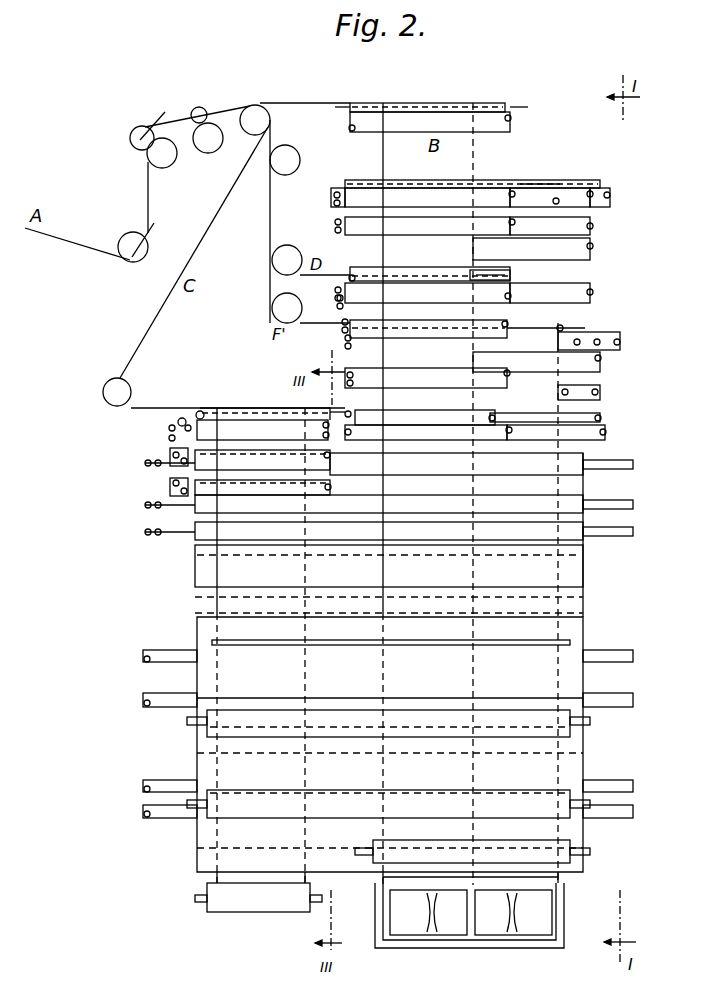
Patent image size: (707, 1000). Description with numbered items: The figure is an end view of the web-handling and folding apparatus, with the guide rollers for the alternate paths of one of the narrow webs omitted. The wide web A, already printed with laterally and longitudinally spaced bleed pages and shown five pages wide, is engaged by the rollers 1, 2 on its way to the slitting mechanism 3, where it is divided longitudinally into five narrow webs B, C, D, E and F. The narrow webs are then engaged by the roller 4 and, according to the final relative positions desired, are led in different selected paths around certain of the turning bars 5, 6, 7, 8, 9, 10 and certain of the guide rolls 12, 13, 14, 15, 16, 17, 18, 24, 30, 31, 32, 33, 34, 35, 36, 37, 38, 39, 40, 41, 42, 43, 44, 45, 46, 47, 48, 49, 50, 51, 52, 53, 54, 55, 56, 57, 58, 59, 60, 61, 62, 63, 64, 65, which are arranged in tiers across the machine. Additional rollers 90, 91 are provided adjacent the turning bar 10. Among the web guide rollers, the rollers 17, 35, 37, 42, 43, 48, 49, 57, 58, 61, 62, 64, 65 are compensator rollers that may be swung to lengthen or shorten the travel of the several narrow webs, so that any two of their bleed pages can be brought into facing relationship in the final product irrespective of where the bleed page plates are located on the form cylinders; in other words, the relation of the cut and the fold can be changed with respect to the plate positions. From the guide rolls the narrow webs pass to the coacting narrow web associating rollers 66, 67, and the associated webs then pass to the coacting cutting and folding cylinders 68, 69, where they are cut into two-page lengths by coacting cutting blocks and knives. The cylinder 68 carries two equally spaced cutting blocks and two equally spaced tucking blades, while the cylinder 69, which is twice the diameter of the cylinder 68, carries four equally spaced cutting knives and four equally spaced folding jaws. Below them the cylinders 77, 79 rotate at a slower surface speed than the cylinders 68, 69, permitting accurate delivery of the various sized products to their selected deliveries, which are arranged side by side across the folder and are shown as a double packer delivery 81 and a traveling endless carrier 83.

The roller 1 is at (125, 256).
The roller 2 is at (168, 166).
The slitting mechanism 3 is at (200, 107).
The roller 4 is at (257, 105).
The turning bar 5 is at (487, 103).
The turning bar 6 is at (373, 180).
The turning bar 7 is at (540, 181).
The turning bar 8 is at (476, 275).
The turning bar 9 is at (568, 323).
The turning bar 10 is at (200, 410).
The guide roll 12 is at (292, 150).
The guide roll 13 is at (272, 256).
The guide roll 14 is at (272, 308).
The guide roll 15 is at (103, 392).
The guide roll 16 is at (509, 118).
The compensator roller 17 is at (560, 196).
The guide roll 18 is at (350, 411).
The guide roll 24 is at (590, 540).
The guide roll 30 is at (146, 530).
The guide roll 31 is at (338, 188).
The guide roll 32 is at (427, 197).
The guide roll 33 is at (422, 226).
The guide roll 34 is at (366, 267).
The compensator roller 35 is at (511, 296).
The guide roll 36 is at (507, 324).
The compensator roller 37 is at (427, 378).
The guide roll 38 is at (442, 413).
The guide roll 39 is at (588, 502).
The guide roll 40 is at (337, 297).
The guide roll 41 is at (342, 320).
The compensator roller 42 is at (345, 338).
The compensator roller 43 is at (352, 372).
The guide roll 44 is at (590, 462).
The guide roll 45 is at (592, 192).
The guide roll 46 is at (610, 196).
The guide roll 47 is at (593, 226).
The compensator roller 48 is at (593, 246).
The compensator roller 49 is at (593, 292).
The guide roll 50 is at (620, 342).
The guide roll 51 is at (600, 392).
The guide roll 52 is at (606, 432).
The guide roll 53 is at (145, 504).
The guide roll 54 is at (578, 338).
The guide roll 55 is at (599, 338).
The guide roll 56 is at (601, 358).
The compensator roller 57 is at (568, 392).
The compensator roller 58 is at (601, 416).
The guide roll 59 is at (145, 463).
The guide roll 60 is at (187, 425).
The compensator roller 61 is at (195, 452).
The compensator roller 62 is at (331, 487).
The guide roll 63 is at (169, 430).
The compensator roller 64 is at (170, 455).
The compensator roller 65 is at (170, 486).
The narrow web associating roller 66 is at (195, 576).
The narrow web associating roller 67 is at (195, 594).
The cutting and folding cylinder 68 is at (578, 641).
The cutting and folding cylinder 69 is at (583, 617).
The cylinder 77 is at (197, 862).
The cylinder 79 is at (197, 742).
The double packer delivery 81 is at (471, 912).
The traveling endless carrier 83 is at (255, 905).
The additional roller 90 is at (232, 420).
The additional roller 91 is at (180, 418).